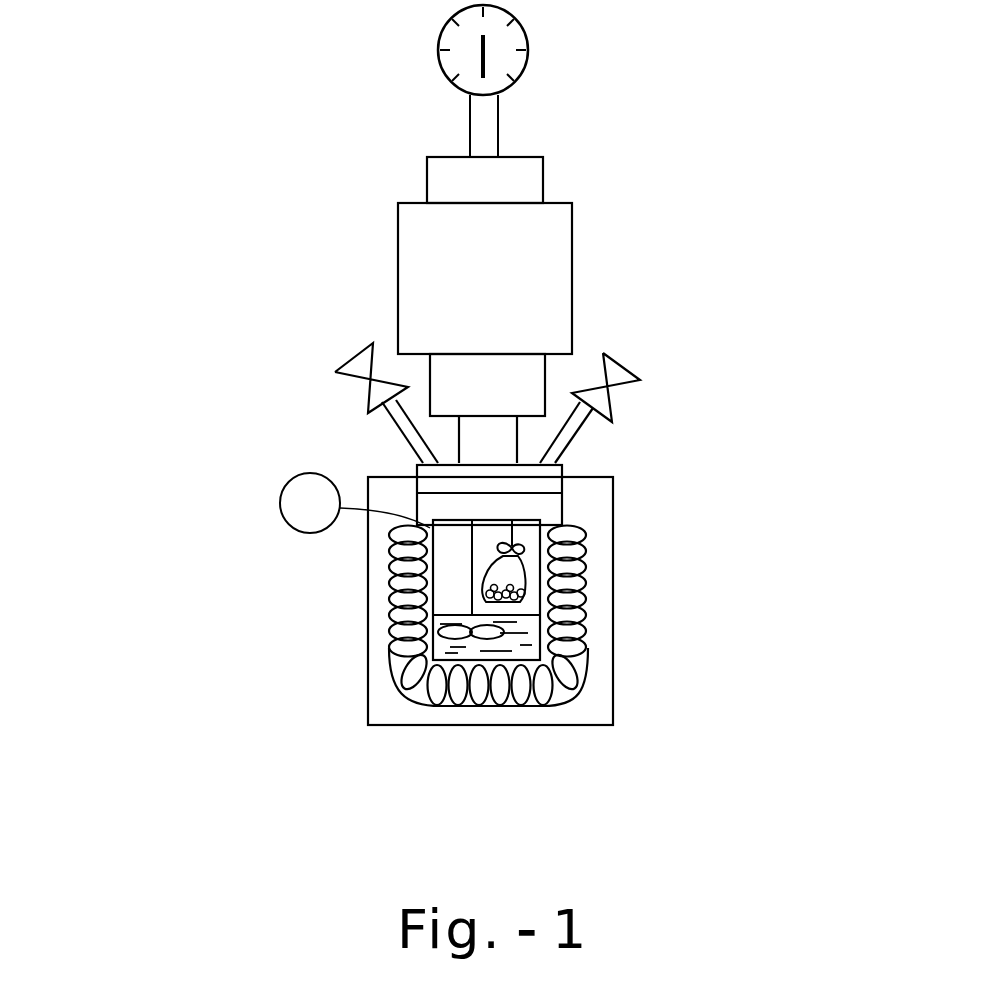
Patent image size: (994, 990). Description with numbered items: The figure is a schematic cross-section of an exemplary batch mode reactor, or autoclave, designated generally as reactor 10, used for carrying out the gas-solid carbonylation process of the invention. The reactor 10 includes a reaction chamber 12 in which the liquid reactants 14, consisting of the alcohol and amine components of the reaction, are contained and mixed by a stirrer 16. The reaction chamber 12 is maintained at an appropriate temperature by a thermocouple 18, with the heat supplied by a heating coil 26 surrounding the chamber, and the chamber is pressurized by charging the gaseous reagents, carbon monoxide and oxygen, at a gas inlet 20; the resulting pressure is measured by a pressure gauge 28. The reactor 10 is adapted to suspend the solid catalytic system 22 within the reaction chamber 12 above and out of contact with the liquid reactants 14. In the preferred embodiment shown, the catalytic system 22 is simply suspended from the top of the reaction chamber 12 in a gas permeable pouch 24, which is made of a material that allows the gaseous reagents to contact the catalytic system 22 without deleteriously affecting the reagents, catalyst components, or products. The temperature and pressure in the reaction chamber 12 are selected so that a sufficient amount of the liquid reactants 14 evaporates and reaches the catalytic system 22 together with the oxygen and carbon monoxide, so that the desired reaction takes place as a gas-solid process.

The batch mode reactor 10 is at (300, 236).
The reaction chamber 12 is at (397, 594).
The liquid reactants 14 is at (488, 650).
The stirrer 16 is at (459, 638).
The thermocouple 18 is at (290, 482).
The gas inlet 20 is at (630, 351).
The catalytic system 22 is at (523, 598).
The gas permeable pouch 24 is at (528, 575).
The heating coil 26 is at (395, 668).
The pressure gauge 28 is at (528, 33).